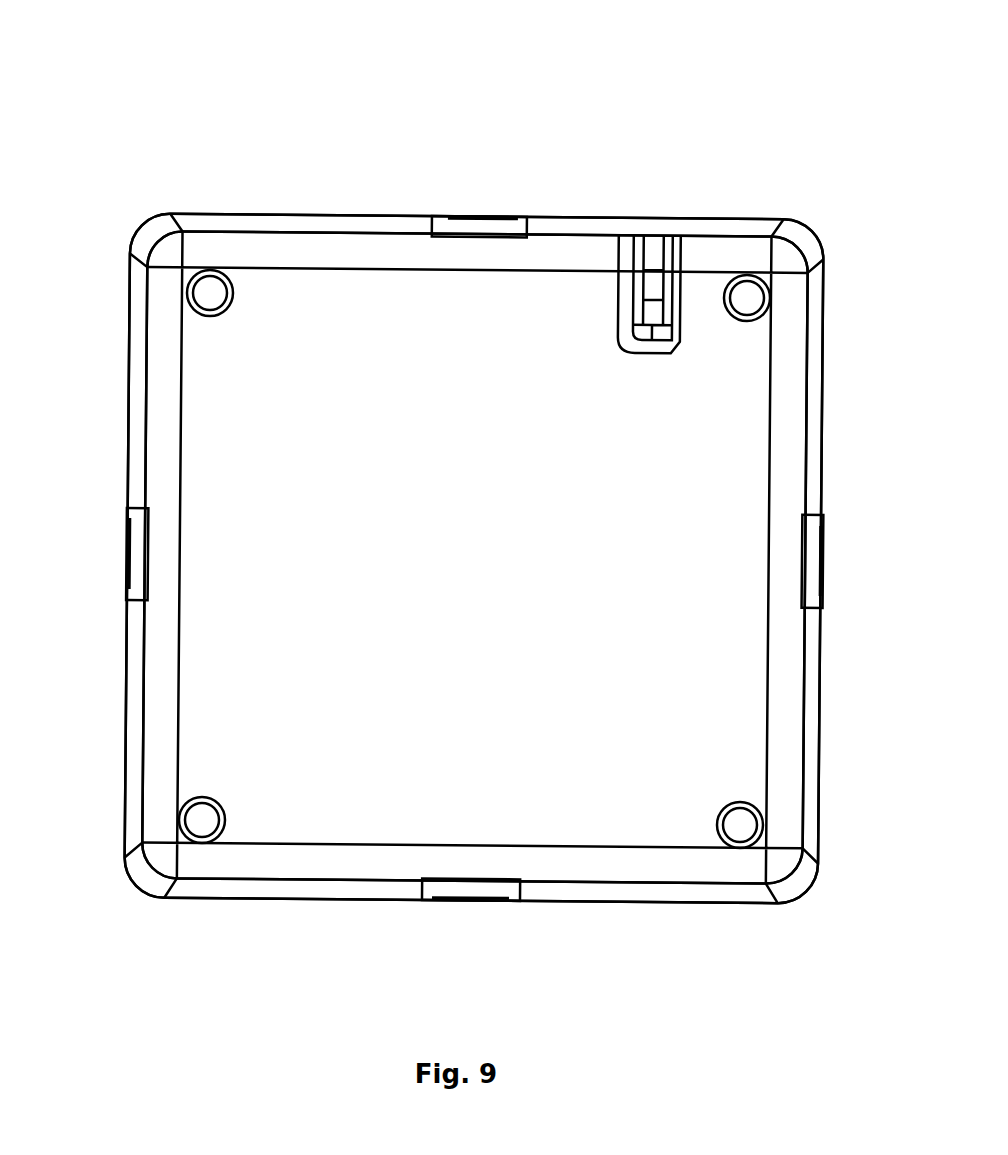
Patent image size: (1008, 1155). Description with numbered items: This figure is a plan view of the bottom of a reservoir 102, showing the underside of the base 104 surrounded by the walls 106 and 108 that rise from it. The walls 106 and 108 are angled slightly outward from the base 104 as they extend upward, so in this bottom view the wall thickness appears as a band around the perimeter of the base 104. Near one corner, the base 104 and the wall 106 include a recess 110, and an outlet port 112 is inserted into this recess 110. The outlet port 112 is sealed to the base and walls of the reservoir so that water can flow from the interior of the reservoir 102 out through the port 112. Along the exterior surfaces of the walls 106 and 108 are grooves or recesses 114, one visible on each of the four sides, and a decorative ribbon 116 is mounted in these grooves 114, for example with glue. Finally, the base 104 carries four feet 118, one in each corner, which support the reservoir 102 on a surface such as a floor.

The reservoir 102 is at (307, 82).
The base 104 is at (400, 415).
The wall 106 is at (573, 236).
The wall 108 is at (825, 373).
The recess 110 is at (630, 240).
The outlet port 112 is at (657, 308).
The grooves or recesses 114 is at (525, 212).
The decorative ribbon 116 is at (470, 214).
The feet 118 is at (208, 294).